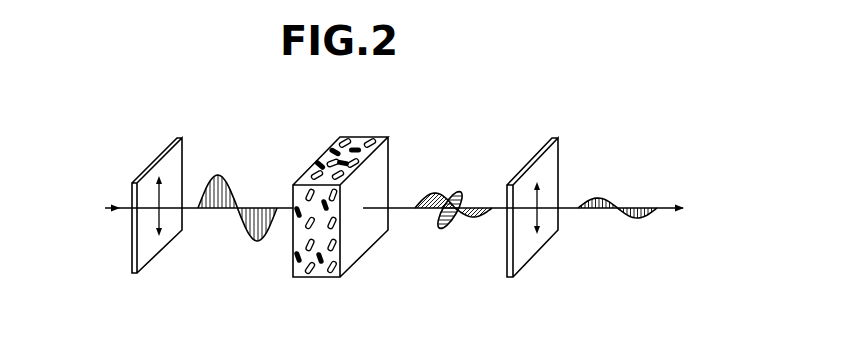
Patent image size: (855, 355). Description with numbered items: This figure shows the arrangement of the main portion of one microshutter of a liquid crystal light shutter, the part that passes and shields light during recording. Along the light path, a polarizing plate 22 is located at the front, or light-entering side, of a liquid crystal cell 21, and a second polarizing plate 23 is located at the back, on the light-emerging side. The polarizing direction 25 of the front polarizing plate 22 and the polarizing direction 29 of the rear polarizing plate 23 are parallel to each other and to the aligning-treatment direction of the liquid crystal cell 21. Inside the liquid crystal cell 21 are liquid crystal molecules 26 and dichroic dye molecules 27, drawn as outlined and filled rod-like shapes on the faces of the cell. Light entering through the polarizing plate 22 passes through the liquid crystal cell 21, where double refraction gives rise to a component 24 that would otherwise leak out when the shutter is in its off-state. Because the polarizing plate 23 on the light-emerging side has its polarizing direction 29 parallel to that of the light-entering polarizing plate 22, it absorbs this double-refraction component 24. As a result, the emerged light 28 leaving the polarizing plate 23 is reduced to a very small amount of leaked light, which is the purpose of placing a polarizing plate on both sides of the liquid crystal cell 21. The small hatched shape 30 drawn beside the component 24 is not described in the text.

The liquid crystal cell 21 is at (374, 138).
The polarizing plate 22 is at (182, 139).
The polarizing plate 23 is at (559, 137).
The component 24 is at (452, 194).
The polarizing direction 25 is at (154, 222).
The liquid crystal molecules 26 is at (341, 277).
The dichroic dye molecules 27 is at (322, 268).
The emerged light 28 is at (600, 197).
The polarizing direction 29 is at (533, 222).
The depolarized light component 30 is at (446, 229).